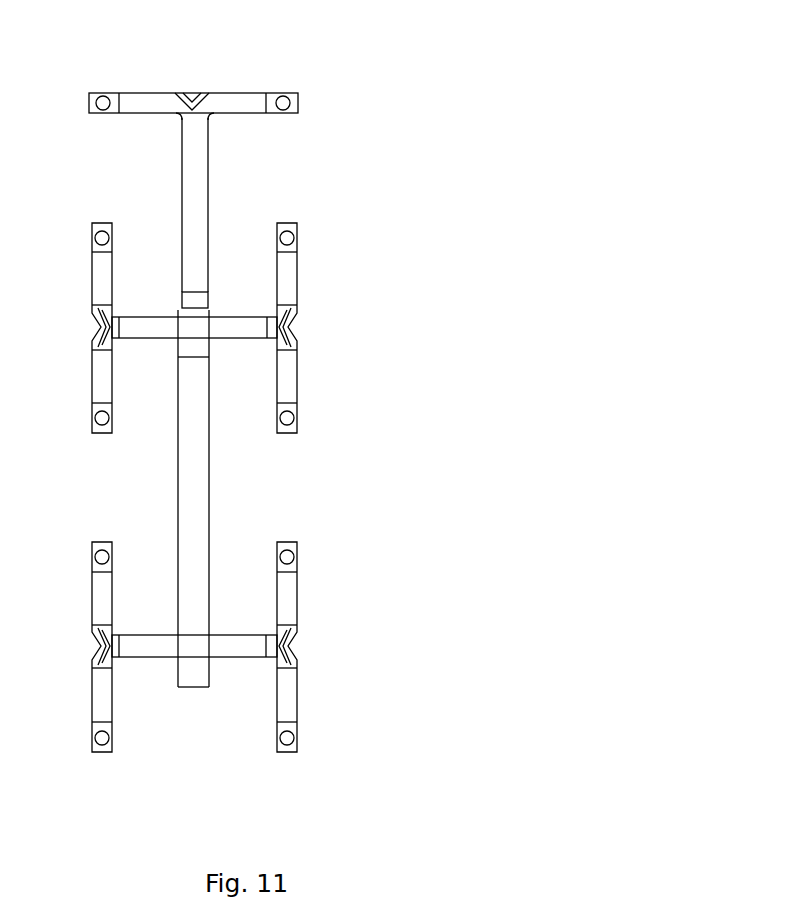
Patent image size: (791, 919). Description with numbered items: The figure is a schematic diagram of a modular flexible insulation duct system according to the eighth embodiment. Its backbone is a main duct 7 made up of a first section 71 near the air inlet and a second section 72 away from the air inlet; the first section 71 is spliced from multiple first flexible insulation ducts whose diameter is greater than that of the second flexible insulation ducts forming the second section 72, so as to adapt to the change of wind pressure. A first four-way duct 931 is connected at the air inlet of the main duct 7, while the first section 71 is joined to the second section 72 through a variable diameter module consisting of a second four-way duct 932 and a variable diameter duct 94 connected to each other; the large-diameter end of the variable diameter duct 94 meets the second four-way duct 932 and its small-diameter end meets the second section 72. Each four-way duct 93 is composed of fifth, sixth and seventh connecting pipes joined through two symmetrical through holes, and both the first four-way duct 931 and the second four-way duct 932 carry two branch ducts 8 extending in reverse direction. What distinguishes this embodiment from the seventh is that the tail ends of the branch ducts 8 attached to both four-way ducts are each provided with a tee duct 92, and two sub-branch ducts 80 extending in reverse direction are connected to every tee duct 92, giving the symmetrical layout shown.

The main duct 7 is at (256, 515).
The branch duct 8 is at (322, 290).
The first section 71 is at (192, 560).
The second section 72 is at (216, 209).
The sub-branch duct 80 is at (103, 280).
The tee duct 92 is at (213, 93).
The four-way duct 93 is at (175, 709).
The variable diameter duct 94 is at (195, 303).
The first four-way duct 931 is at (198, 647).
The second four-way duct 932 is at (197, 327).